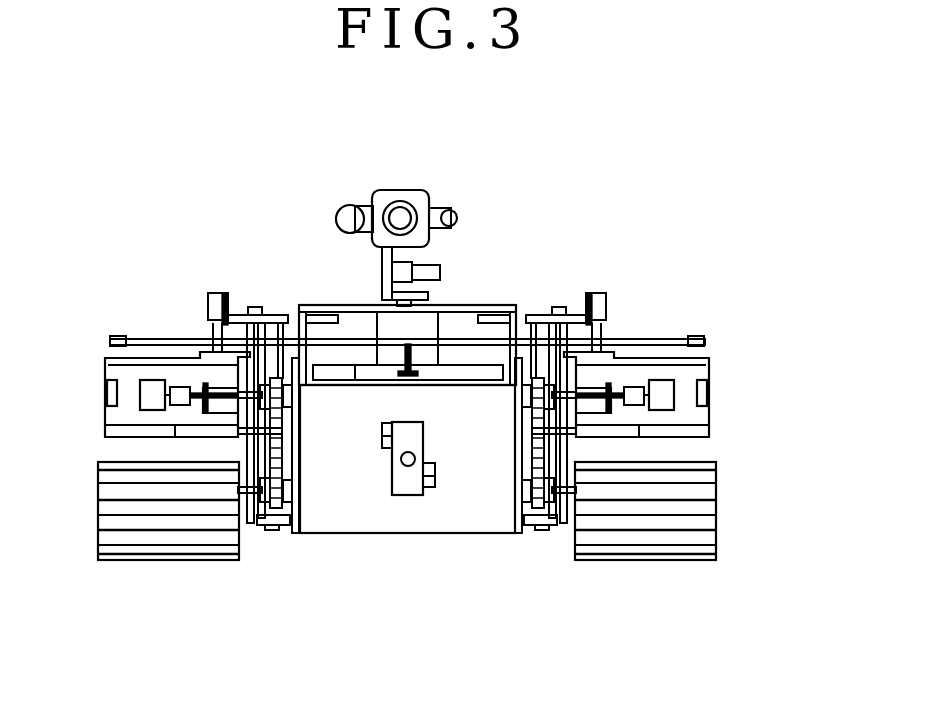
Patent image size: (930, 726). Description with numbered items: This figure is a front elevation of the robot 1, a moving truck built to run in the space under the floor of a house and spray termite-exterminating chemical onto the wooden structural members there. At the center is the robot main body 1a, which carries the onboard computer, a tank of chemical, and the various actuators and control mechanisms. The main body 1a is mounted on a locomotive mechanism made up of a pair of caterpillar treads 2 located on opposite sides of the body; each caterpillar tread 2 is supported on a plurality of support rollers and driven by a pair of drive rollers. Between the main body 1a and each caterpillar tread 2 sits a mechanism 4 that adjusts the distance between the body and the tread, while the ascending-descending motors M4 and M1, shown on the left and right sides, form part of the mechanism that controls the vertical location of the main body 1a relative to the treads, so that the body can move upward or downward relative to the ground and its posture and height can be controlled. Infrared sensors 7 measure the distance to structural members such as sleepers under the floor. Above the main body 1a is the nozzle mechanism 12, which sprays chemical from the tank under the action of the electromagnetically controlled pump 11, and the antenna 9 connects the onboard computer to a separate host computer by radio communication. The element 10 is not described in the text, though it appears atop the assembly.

The robot 1 is at (606, 218).
The robot main body 1a is at (484, 508).
The caterpillar tread 2 is at (185, 535).
The mechanism 4 is at (268, 312).
The infrared sensor 7 is at (108, 393).
The antenna 9 is at (660, 338).
The camera 10 is at (400, 188).
The pump 11 is at (467, 325).
The nozzle mechanism 12 is at (449, 210).
The ascending-descending motor M1 is at (700, 368).
The ascending-descending motor M4 is at (112, 368).